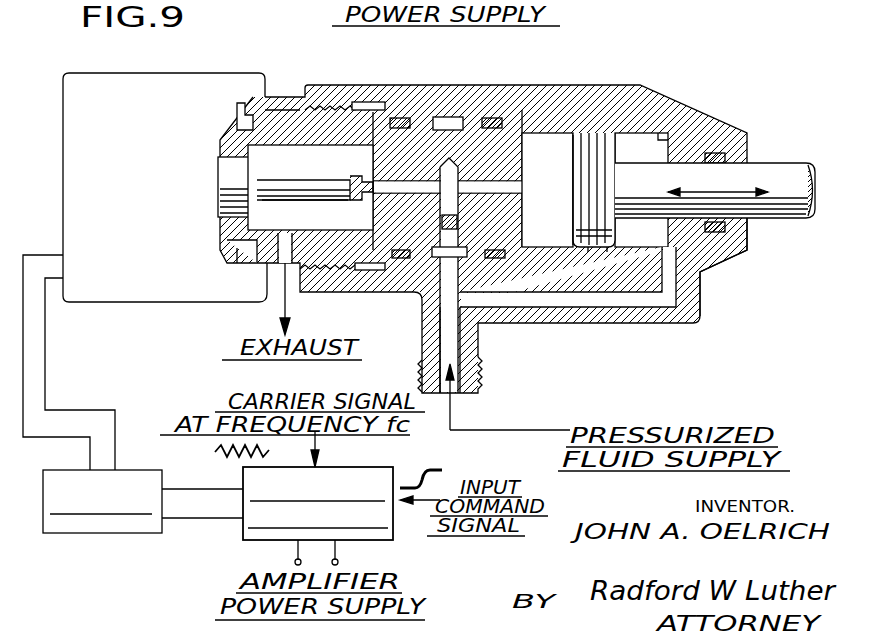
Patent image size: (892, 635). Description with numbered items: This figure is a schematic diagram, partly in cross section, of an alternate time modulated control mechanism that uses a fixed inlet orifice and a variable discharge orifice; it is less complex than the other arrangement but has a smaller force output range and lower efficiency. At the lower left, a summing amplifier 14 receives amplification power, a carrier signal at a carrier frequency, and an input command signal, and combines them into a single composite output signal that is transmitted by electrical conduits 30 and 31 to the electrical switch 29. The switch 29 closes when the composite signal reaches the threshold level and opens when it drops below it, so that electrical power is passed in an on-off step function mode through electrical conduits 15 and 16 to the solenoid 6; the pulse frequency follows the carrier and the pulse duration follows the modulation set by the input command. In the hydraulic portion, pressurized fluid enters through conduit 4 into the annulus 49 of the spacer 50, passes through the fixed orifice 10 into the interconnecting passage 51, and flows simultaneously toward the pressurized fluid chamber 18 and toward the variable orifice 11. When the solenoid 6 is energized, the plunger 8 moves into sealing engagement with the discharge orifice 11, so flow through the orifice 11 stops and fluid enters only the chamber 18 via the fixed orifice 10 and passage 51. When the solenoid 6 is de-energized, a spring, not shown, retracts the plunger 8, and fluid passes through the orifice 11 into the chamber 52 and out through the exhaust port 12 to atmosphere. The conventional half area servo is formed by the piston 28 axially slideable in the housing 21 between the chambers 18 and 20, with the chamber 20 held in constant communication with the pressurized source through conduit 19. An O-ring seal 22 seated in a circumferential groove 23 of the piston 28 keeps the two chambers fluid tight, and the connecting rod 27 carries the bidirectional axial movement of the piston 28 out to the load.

The conduit 4 is at (453, 350).
The solenoid 6 is at (143, 191).
The plunger 8 is at (300, 164).
The fixed orifice 10 is at (457, 222).
The variable orifice 11 is at (362, 178).
The exhaust port 12 is at (275, 267).
The summing amplifier 14 is at (362, 475).
The electrical conduit 15 is at (78, 408).
The electrical conduit 16 is at (58, 437).
The pressurized fluid chamber 18 is at (547, 140).
The conduit 19 is at (688, 297).
The pressurized fluid chamber 20 is at (632, 145).
The housing 21 is at (728, 253).
The O-ring seal 22 is at (588, 248).
The circumferential groove 23 is at (608, 248).
The connecting rod 27 is at (790, 173).
The piston 28 is at (573, 185).
The electrical switch 29 is at (85, 527).
The electrical conduit 30 is at (200, 518).
The electrical conduit 31 is at (202, 463).
The annulus 49 is at (447, 125).
The spacer 50 is at (502, 142).
The interconnecting passage 51 is at (490, 187).
The chamber 52 is at (321, 224).